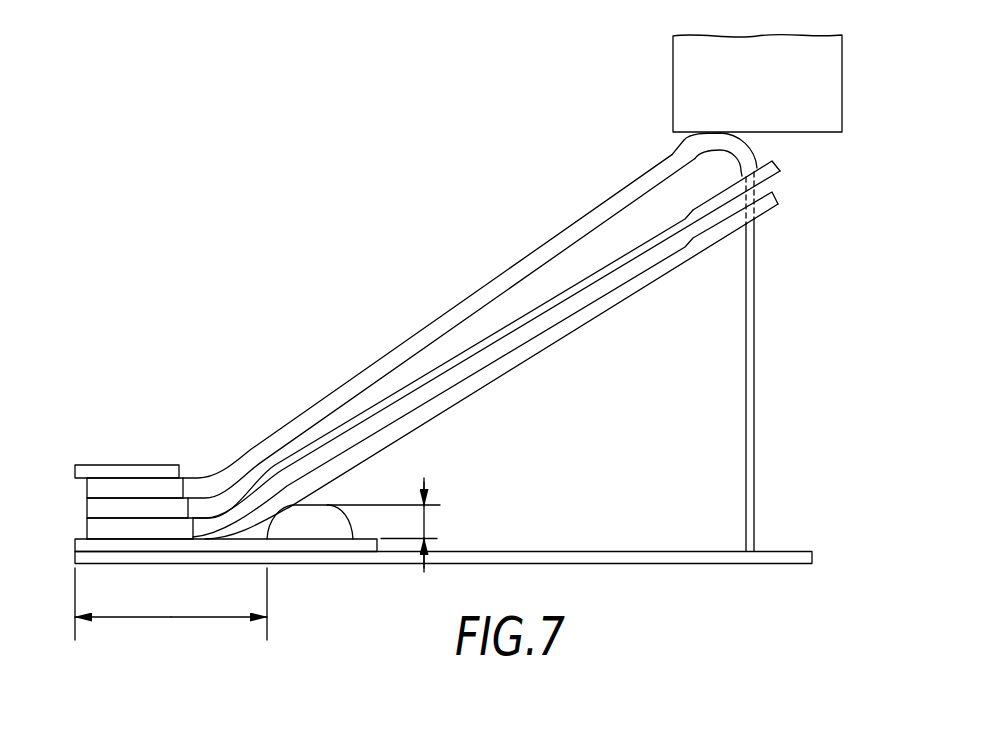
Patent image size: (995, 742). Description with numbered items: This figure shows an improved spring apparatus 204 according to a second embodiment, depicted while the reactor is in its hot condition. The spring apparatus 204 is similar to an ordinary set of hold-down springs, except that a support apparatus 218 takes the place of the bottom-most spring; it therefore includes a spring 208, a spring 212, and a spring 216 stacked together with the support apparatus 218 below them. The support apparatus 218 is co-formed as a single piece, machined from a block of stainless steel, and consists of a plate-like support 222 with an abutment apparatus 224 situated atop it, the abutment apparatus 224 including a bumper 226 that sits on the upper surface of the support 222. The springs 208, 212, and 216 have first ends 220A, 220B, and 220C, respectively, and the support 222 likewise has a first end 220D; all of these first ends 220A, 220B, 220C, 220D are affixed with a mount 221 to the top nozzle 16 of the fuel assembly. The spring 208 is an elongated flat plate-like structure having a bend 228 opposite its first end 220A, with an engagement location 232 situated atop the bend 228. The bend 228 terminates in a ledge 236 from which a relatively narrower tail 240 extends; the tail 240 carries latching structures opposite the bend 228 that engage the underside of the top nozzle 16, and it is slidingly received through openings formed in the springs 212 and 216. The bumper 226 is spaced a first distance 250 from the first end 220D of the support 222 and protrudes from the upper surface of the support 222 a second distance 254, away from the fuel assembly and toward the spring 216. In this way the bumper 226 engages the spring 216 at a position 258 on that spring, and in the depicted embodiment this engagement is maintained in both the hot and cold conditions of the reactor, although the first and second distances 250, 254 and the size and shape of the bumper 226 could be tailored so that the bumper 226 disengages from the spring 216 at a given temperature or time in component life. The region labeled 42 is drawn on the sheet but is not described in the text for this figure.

The top nozzle 16 is at (613, 551).
The mount block 42 is at (842, 75).
The spring apparatus 204 is at (515, 305).
The spring 208 is at (522, 260).
The spring 212 is at (567, 284).
The spring 216 is at (591, 326).
The support apparatus 218 is at (380, 546).
The first end 220A is at (87, 490).
The first end 220B is at (87, 508).
The first end 220C is at (87, 523).
The first end 220D is at (75, 543).
The mount 221 is at (90, 470).
The support 222 is at (262, 546).
The abutment apparatus 224 is at (350, 508).
The bumper 226 is at (355, 525).
The bend 228 is at (757, 147).
The engagement location 232 is at (712, 130).
The ledge 236 is at (776, 162).
The tail 240 is at (756, 272).
The first distance 250 is at (183, 620).
The second distance 254 is at (426, 520).
The position 258 is at (282, 508).